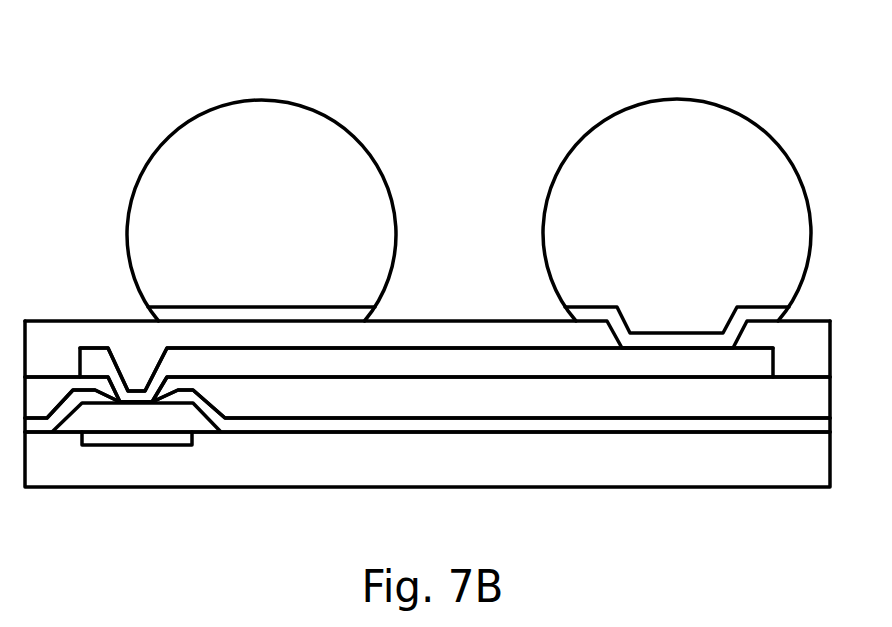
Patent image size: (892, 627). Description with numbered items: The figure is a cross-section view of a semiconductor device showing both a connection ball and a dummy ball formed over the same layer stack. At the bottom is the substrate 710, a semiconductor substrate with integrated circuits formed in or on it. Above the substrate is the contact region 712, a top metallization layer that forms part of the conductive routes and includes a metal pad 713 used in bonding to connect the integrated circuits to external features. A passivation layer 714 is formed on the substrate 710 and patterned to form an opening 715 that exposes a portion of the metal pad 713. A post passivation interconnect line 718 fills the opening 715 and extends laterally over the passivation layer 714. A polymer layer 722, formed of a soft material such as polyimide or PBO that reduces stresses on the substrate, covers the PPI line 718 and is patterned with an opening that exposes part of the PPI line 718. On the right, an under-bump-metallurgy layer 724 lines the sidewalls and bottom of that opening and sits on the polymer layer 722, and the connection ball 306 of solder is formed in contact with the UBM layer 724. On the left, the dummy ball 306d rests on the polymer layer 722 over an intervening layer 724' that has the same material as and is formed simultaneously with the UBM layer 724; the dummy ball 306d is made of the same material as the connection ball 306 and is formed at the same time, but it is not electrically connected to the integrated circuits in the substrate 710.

The dummy ball 306d is at (262, 113).
The connection ball 306 is at (677, 113).
The intervening layer 724' is at (213, 297).
The under-bump-metallurgy layer 724 is at (628, 306).
The polymer layer 722 is at (553, 335).
The post passivation interconnect line 718 is at (468, 367).
The opening 715 is at (386, 403).
The passivation layer 714 is at (303, 427).
The metal pad 713 is at (165, 422).
The contact region 712 is at (108, 440).
The substrate 710 is at (635, 470).